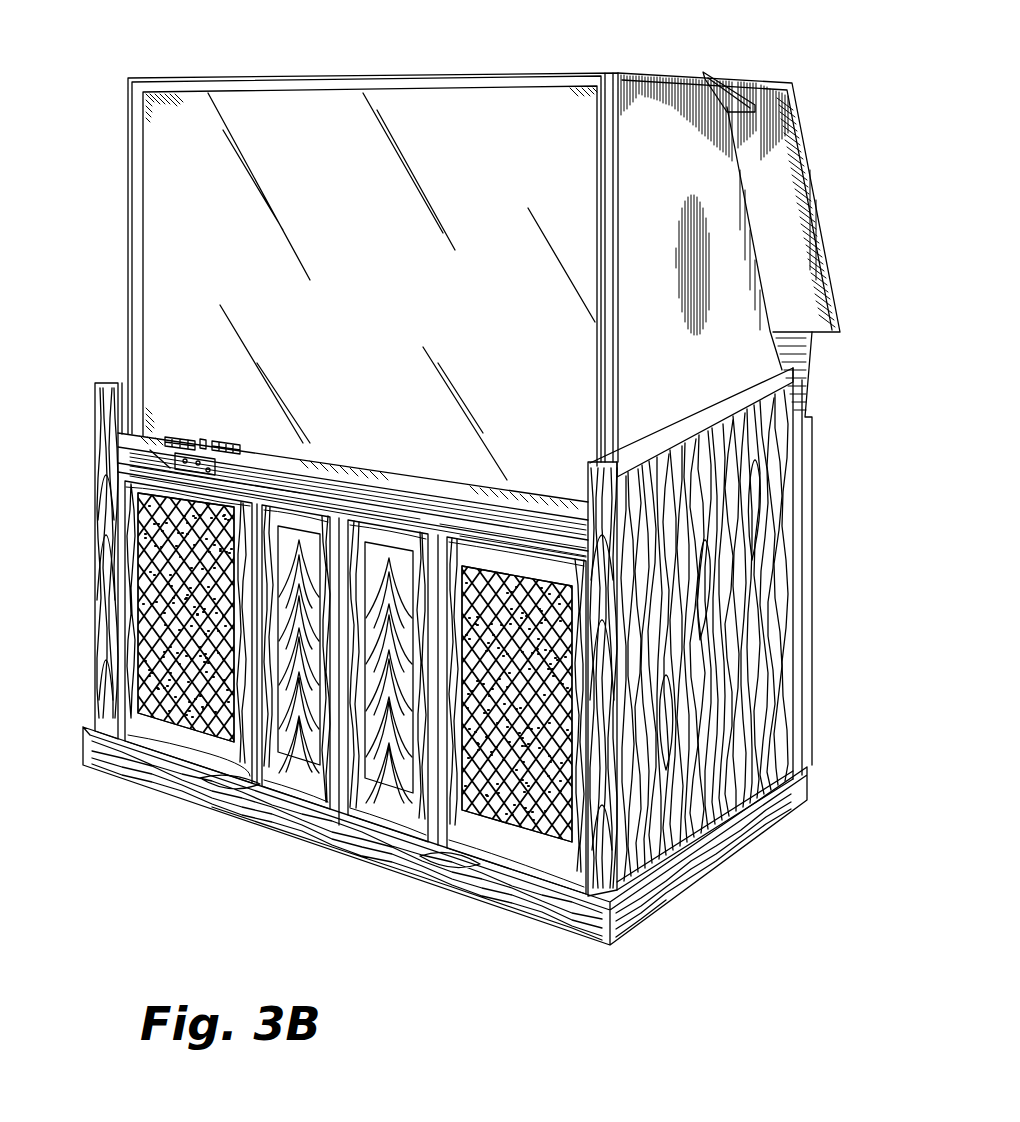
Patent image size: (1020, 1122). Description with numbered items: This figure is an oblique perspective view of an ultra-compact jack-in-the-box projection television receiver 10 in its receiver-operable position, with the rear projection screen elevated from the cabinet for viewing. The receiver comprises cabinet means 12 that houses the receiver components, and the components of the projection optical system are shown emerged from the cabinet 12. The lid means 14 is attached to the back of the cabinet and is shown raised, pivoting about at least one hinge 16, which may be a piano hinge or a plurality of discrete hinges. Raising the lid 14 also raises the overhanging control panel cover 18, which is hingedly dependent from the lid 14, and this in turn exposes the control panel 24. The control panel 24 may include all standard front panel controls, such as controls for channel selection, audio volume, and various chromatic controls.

The projection television receiver 10 is at (96, 192).
The cabinet means 12 is at (98, 645).
The lid means 14 is at (812, 178).
The hinge 16 is at (826, 416).
The control panel cover 18 is at (722, 73).
The control panel 24 is at (118, 382).